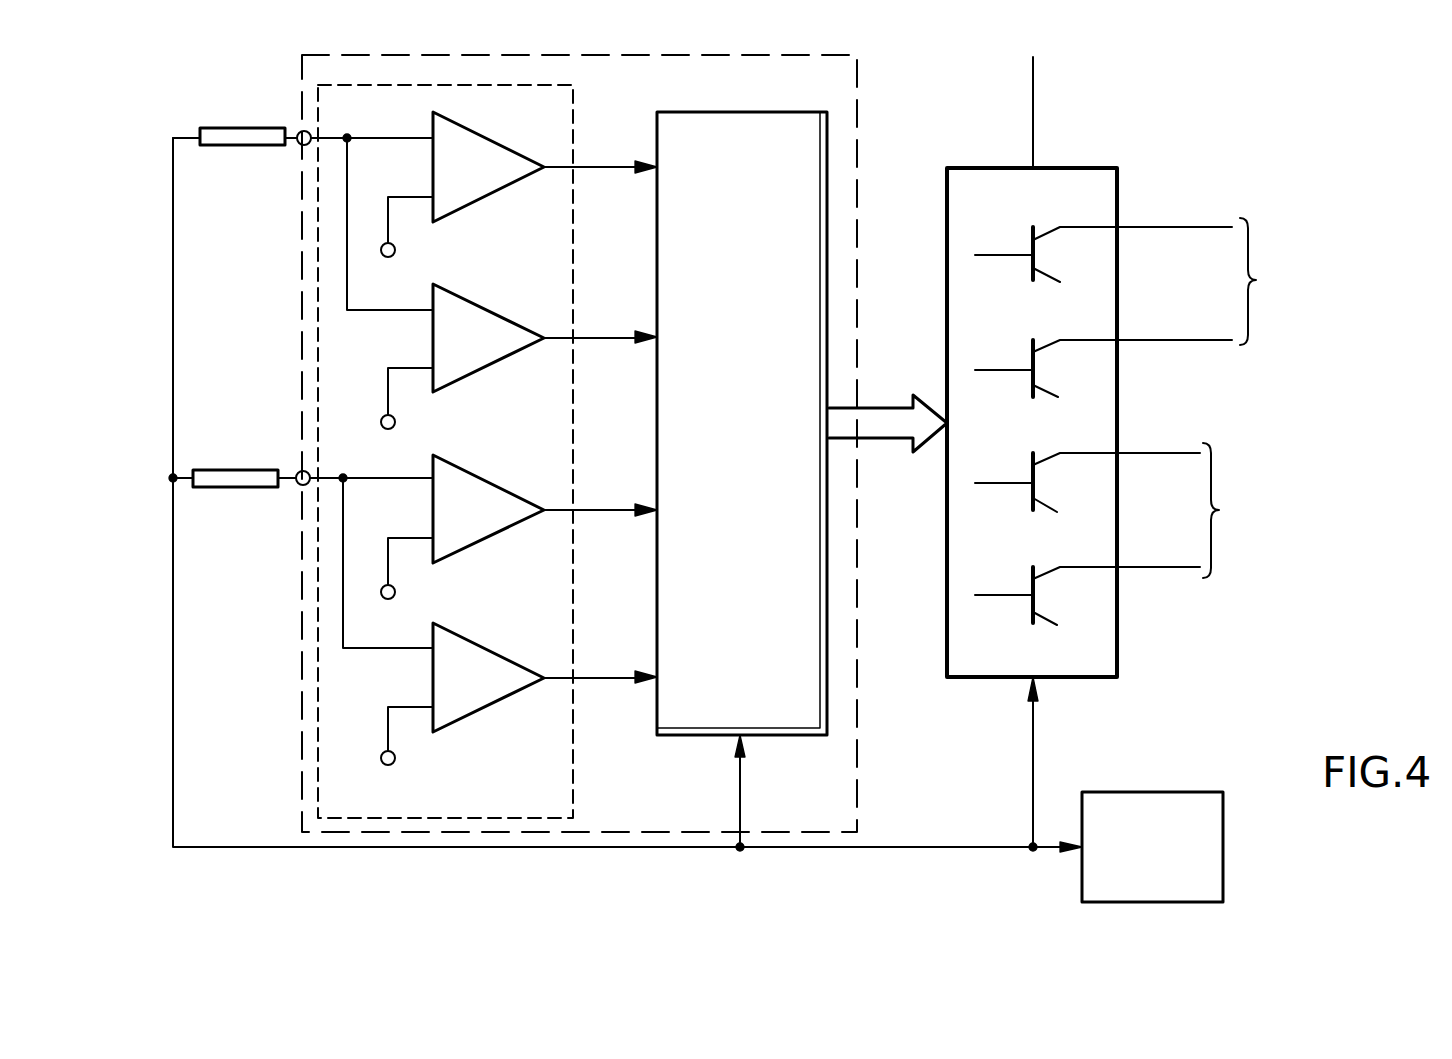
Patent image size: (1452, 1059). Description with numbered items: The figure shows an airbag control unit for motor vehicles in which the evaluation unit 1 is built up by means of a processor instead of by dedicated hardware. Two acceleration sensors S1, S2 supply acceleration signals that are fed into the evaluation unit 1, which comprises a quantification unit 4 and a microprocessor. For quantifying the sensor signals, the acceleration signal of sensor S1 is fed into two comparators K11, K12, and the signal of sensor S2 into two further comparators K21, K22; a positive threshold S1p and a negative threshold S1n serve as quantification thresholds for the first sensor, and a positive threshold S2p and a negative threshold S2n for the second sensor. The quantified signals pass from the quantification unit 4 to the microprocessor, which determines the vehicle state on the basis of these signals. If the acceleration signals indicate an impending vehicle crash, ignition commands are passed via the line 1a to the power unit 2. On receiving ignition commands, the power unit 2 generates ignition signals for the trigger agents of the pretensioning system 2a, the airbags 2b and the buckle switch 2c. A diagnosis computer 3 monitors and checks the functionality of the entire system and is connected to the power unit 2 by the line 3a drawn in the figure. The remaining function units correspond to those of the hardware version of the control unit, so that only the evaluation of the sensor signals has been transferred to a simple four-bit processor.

The evaluation unit 1 is at (858, 745).
The line 1a is at (894, 442).
The power unit 2 is at (1118, 188).
The pretensioning system 2a is at (1262, 281).
The airbags 2b is at (1222, 511).
The buckle switch 2c is at (1035, 96).
The diagnosis computer 3 is at (1228, 811).
The supply line to output stage 3a is at (1037, 738).
The quantification unit 4 is at (573, 778).
The acceleration sensor S1 is at (240, 147).
The acceleration sensor S2 is at (237, 489).
The comparator K11 is at (518, 124).
The comparator K12 is at (509, 319).
The comparator K21 is at (507, 491).
The comparator K22 is at (500, 655).
The positive threshold S1p is at (393, 257).
The negative threshold S1n is at (393, 429).
The positive threshold S2p is at (393, 599).
The negative threshold S2n is at (393, 765).